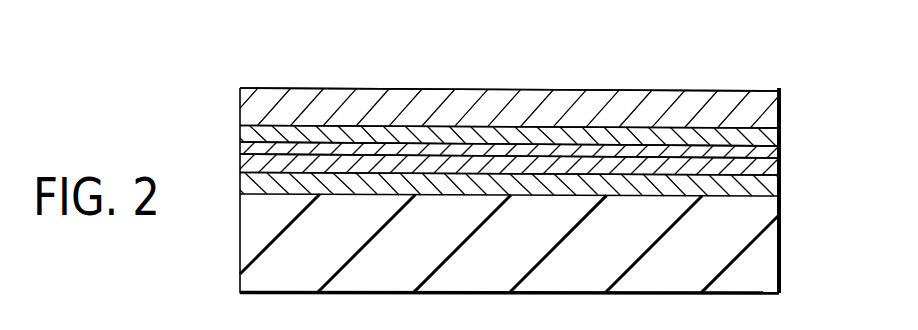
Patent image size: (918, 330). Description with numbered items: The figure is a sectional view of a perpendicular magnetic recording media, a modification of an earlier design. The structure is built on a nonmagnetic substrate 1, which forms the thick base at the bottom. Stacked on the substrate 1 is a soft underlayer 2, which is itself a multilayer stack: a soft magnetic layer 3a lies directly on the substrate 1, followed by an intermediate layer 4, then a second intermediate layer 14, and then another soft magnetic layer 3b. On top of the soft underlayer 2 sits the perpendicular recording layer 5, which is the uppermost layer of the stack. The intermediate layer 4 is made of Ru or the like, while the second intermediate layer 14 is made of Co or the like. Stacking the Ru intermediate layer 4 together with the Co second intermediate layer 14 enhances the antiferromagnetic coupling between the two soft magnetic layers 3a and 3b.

The nonmagnetic substrate 1 is at (768, 267).
The soft underlayer 2 is at (846, 88).
The soft magnetic layer 3a is at (783, 188).
The soft magnetic layer 3b is at (783, 127).
The intermediate layer 4 is at (783, 168).
The perpendicular recording layer 5 is at (782, 93).
The second intermediate layer 14 is at (783, 149).